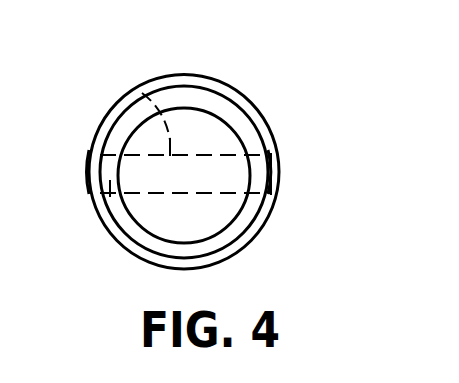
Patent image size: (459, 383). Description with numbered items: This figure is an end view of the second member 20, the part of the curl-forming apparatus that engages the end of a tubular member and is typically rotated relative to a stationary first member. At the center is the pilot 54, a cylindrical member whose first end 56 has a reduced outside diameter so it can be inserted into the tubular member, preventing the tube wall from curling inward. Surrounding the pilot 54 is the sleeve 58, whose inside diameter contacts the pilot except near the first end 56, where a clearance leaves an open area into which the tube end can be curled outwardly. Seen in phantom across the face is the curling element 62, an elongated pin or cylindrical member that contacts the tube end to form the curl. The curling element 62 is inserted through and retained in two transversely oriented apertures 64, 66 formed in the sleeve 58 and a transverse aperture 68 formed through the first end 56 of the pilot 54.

The second member 20 is at (305, 40).
The pilot 54 is at (207, 98).
The first end 56 is at (213, 138).
The sleeve 58 is at (263, 228).
The curling element 62 is at (262, 168).
The aperture 64 is at (277, 177).
The aperture 66 is at (88, 177).
The aperture 68 is at (138, 88).